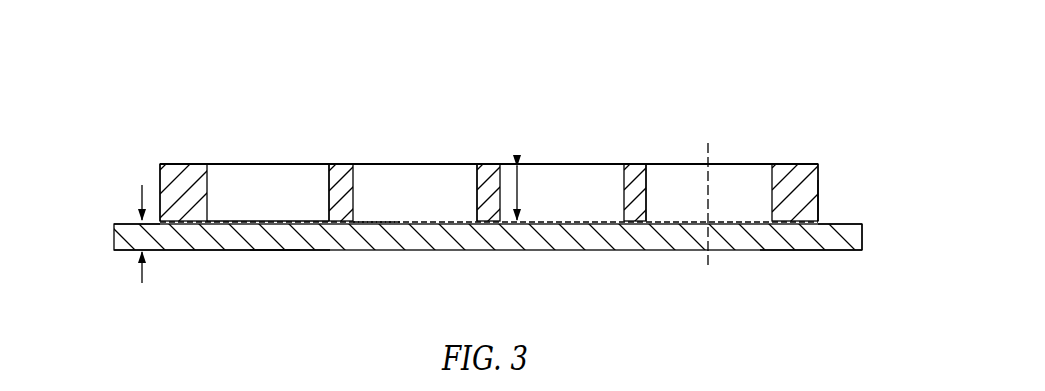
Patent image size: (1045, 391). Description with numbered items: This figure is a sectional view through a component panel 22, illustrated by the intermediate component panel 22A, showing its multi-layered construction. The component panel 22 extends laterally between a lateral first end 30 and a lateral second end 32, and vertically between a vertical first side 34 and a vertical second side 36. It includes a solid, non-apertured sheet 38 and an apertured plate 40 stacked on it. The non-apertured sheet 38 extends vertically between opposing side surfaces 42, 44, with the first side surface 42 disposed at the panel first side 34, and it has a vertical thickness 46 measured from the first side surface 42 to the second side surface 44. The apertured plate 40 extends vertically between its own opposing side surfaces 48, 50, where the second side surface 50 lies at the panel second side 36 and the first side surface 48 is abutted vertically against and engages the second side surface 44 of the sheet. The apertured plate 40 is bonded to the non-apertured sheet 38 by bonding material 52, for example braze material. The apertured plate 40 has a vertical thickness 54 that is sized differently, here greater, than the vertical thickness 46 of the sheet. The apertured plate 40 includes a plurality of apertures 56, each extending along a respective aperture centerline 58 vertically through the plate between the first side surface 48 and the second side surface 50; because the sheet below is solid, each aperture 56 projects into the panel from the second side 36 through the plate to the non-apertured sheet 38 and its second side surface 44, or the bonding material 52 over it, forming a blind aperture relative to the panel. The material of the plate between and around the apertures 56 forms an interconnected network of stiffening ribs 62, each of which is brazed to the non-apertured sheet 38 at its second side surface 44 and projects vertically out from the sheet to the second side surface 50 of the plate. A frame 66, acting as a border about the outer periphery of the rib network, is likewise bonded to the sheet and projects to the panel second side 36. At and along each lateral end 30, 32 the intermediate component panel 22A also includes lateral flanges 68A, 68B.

The component panel 22 is at (507, 82).
The intermediate component panel 22A is at (778, 84).
The lateral first end 30 is at (114, 243).
The lateral second end 32 is at (862, 240).
The vertical first side 34 is at (200, 251).
The vertical second side 36 is at (181, 164).
The non-apertured sheet 38 is at (815, 252).
The apertured plate 40 is at (825, 163).
The first side surface of the non-apertured sheet 42 is at (292, 251).
The second side surface of the non-apertured sheet 44 is at (296, 222).
The vertical thickness of the non-apertured sheet 46 is at (142, 283).
The first side surface of the apertured plate 48 is at (340, 223).
The second side surface of the apertured plate 50 is at (343, 164).
The bonding material 52 is at (373, 217).
The vertical thickness of the apertured plate 54 is at (517, 195).
The apertures 56 is at (250, 195).
The aperture centerline 58 is at (710, 152).
The stiffening ribs 62 is at (329, 177).
The frame 66 is at (159, 180).
The lateral flange 68A is at (123, 222).
The lateral flange 68B is at (862, 224).